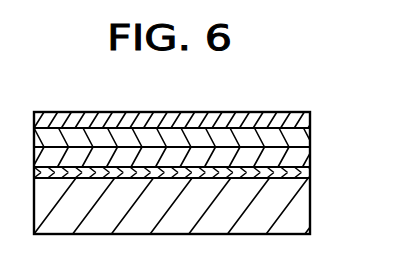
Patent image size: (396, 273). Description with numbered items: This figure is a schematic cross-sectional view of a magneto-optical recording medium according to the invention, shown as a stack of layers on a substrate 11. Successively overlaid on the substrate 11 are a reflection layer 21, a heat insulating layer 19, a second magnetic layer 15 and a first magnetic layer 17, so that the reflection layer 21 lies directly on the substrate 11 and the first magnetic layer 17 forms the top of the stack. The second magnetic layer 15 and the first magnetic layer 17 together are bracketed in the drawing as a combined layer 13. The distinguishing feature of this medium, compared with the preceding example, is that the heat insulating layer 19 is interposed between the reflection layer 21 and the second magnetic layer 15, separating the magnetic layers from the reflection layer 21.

The substrate 11 is at (311, 208).
The magnetic recording layer 13 is at (347, 83).
The second magnetic layer 15 is at (311, 144).
The first magnetic layer 17 is at (311, 117).
The heat insulating layer 19 is at (311, 157).
The reflection layer 21 is at (311, 174).